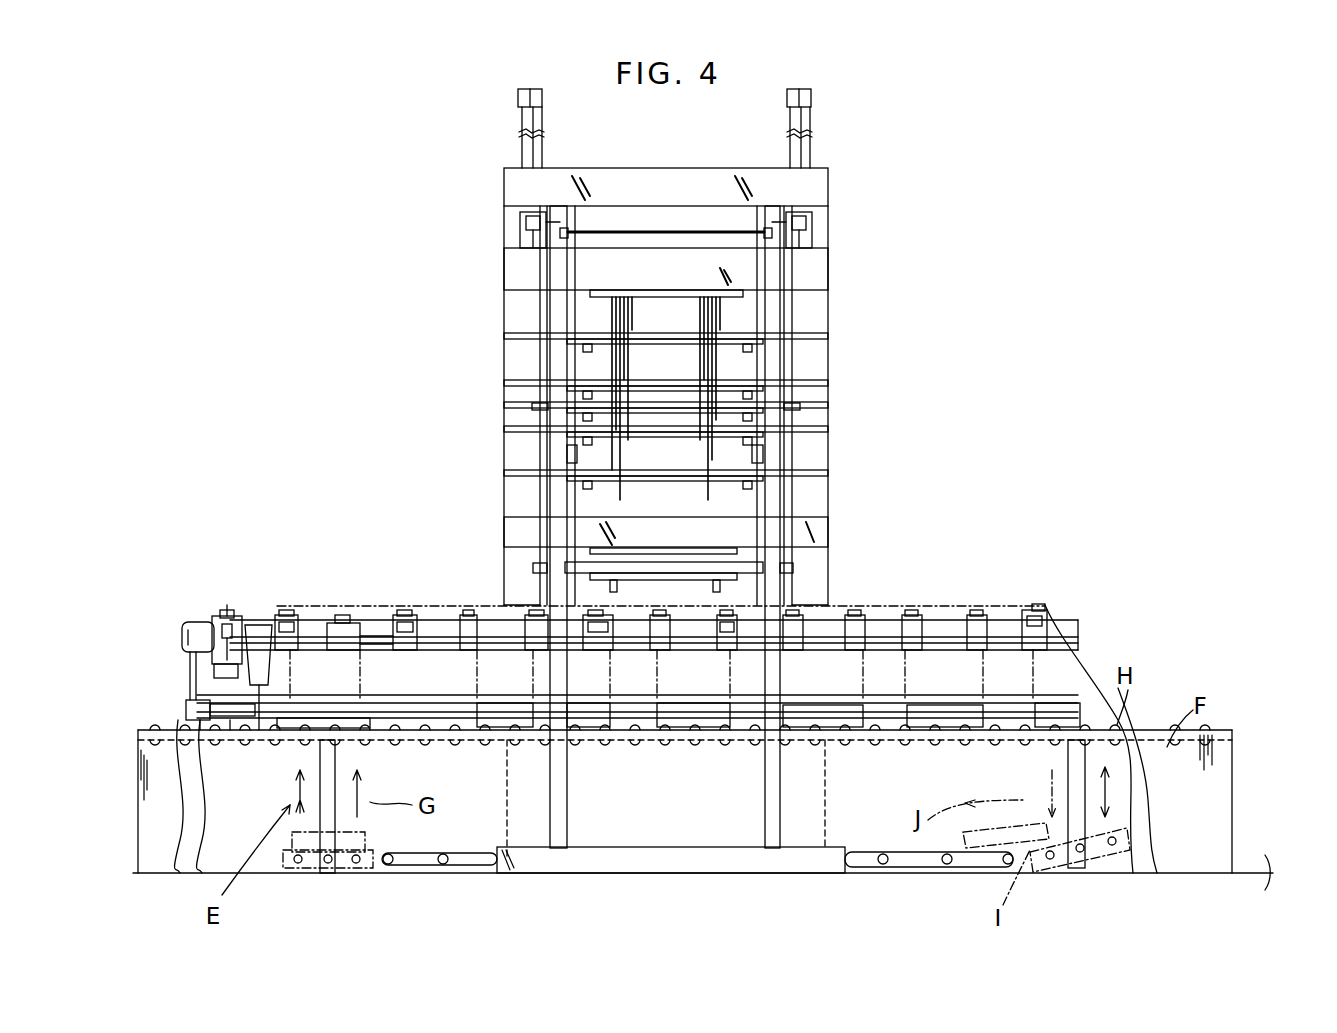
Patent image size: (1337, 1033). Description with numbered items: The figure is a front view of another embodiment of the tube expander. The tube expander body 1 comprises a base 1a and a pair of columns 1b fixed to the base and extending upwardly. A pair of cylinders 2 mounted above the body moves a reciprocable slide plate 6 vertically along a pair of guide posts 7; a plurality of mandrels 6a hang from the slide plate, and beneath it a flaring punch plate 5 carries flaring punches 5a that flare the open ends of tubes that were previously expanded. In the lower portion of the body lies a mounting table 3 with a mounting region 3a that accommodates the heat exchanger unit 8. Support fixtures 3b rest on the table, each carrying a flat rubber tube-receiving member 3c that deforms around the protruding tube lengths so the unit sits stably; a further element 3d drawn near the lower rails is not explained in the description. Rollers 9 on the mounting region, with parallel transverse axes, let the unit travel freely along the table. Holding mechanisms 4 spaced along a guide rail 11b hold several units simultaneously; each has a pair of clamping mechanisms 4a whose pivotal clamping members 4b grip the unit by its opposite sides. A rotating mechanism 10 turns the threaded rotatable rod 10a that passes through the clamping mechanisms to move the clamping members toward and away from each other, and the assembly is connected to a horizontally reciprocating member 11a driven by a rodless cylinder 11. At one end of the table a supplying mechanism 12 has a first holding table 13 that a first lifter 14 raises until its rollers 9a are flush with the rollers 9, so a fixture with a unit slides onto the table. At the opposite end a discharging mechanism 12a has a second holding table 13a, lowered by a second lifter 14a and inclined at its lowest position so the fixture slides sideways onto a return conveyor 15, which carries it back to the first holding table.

The tube expander body 1 is at (830, 232).
The base 1a is at (835, 870).
The columns 1b is at (505, 440).
The cylinders 2 is at (790, 112).
The mounting table 3 is at (145, 728).
The mounting region 3a is at (138, 735).
The support fixtures 3b is at (345, 752).
The tube-receiving member 3c is at (445, 745).
The lower rails 3d is at (462, 712).
The holding mechanisms 4 is at (282, 618).
The clamping mechanisms 4a is at (287, 628).
The clamping member 4b is at (617, 625).
The flaring punch plate 5 is at (795, 566).
The flaring punches 5a is at (606, 586).
The reciprocable slide plate 6 is at (515, 266).
The mandrels 6a is at (718, 455).
The guide posts 7 is at (557, 362).
The heat exchanger unit 8 is at (330, 605).
The rollers 9 is at (228, 745).
The rollers 9a is at (290, 745).
The rotating mechanism 10 is at (205, 630).
The rotatable rod 10a is at (372, 632).
The rodless cylinder 11 is at (200, 718).
The horizontally reciprocating member 11a is at (262, 660).
The guide rail 11b is at (320, 635).
The supplying mechanism 12 is at (330, 868).
The discharging mechanism 12a is at (1085, 862).
The first holding table 13 is at (368, 868).
The second holding table 13a is at (1048, 865).
The first lifter 14 is at (290, 820).
The second lifter 14a is at (1125, 803).
The return conveyor 15 is at (487, 862).